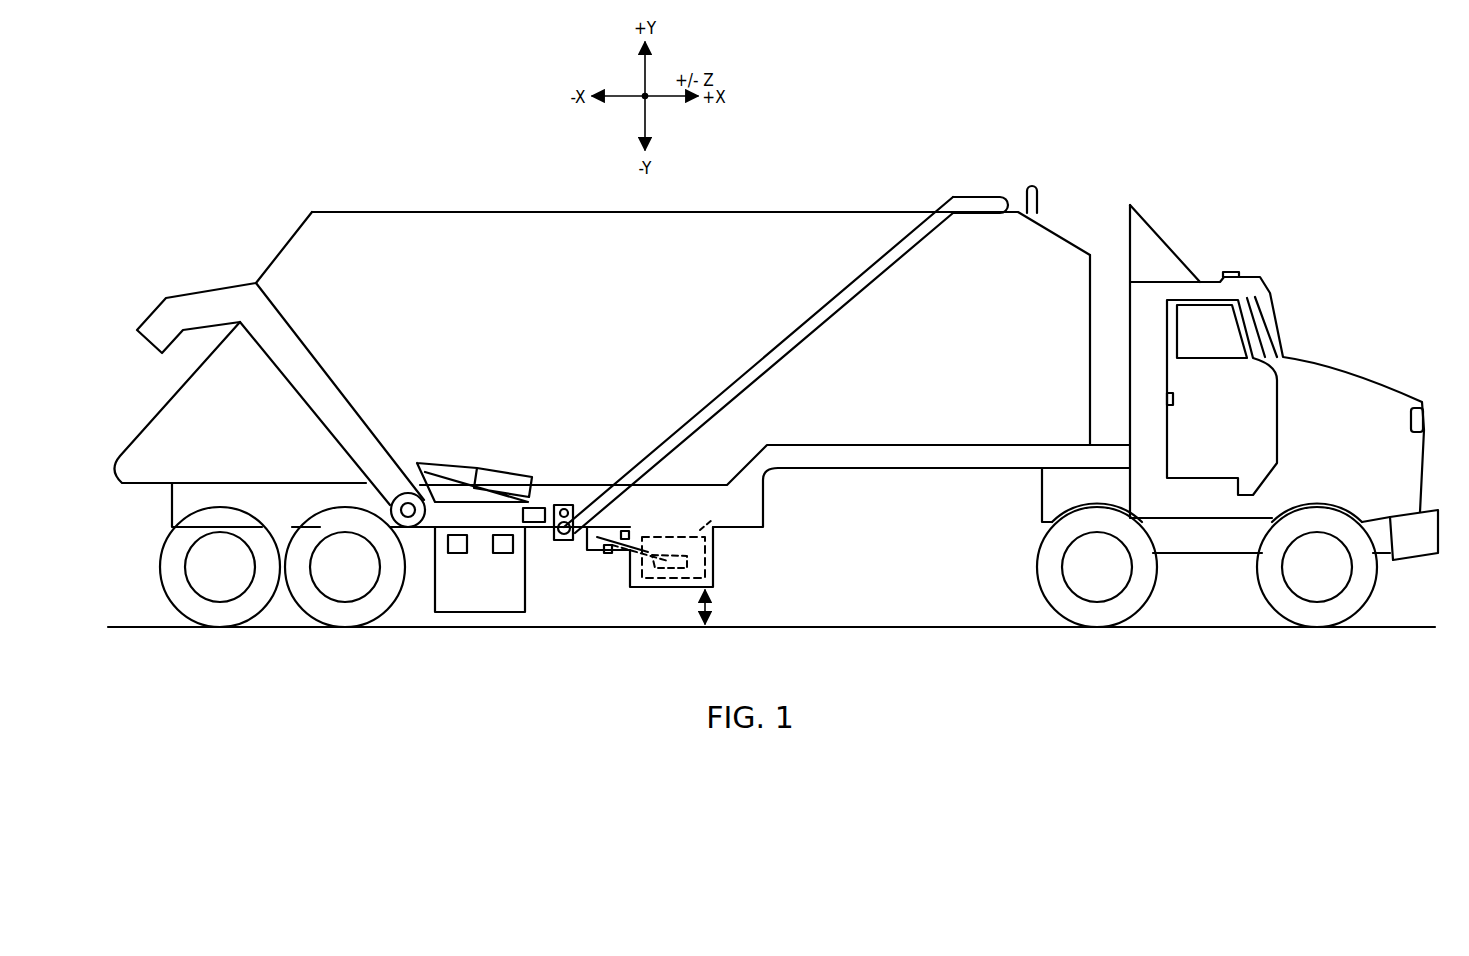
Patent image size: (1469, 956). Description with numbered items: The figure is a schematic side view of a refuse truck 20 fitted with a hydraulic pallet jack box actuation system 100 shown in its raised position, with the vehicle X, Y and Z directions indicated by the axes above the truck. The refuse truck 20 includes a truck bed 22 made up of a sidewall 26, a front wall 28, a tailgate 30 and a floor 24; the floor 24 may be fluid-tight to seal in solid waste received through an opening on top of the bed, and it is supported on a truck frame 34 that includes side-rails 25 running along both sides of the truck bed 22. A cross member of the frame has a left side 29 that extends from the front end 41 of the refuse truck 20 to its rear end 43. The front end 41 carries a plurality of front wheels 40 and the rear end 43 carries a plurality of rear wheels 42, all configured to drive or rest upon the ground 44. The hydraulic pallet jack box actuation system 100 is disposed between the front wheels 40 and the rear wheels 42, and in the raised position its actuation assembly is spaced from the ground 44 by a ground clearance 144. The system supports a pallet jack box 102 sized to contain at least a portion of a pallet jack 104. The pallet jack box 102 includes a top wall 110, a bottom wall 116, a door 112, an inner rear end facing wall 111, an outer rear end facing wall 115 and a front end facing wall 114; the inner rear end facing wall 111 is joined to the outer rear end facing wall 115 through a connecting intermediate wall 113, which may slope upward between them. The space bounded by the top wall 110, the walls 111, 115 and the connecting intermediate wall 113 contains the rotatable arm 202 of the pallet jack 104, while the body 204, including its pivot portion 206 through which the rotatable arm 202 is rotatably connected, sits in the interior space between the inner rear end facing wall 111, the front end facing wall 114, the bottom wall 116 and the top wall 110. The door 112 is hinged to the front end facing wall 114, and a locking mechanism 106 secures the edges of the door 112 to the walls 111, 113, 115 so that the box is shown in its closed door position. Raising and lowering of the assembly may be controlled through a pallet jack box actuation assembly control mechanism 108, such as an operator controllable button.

The refuse truck 20 is at (1258, 195).
The truck bed 22 is at (1050, 220).
The floor 24 is at (813, 445).
The side-rails 25 is at (918, 462).
The sidewall 26 is at (1000, 408).
The front wall 28 is at (1080, 248).
The left side 29 is at (872, 466).
The tailgate 30 is at (290, 240).
The truck frame 34 is at (766, 517).
The front wheels 40 is at (1357, 612).
The front end 41 is at (1443, 465).
The rear wheels 42 is at (387, 612).
The rear end 43 is at (146, 381).
The ground 44 is at (1218, 628).
The hydraulic pallet jack box actuation system 100 is at (566, 613).
The pallet jack box 102 is at (720, 577).
The pallet jack 104 is at (708, 527).
The locking mechanism 106 is at (623, 531).
The pallet jack box actuation assembly control mechanism 108 is at (537, 507).
The top wall 110 is at (675, 530).
The inner rear end facing wall 111 is at (624, 580).
The door 112 is at (657, 587).
The connecting intermediate wall 113 is at (590, 552).
The front end facing wall 114 is at (713, 587).
The outer rear end facing wall 115 is at (573, 546).
The bottom wall 116 is at (687, 590).
The ground clearance 144 is at (707, 612).
The rotatable arm 202 is at (630, 530).
The body 204 is at (707, 556).
The pivot portion 206 is at (705, 530).